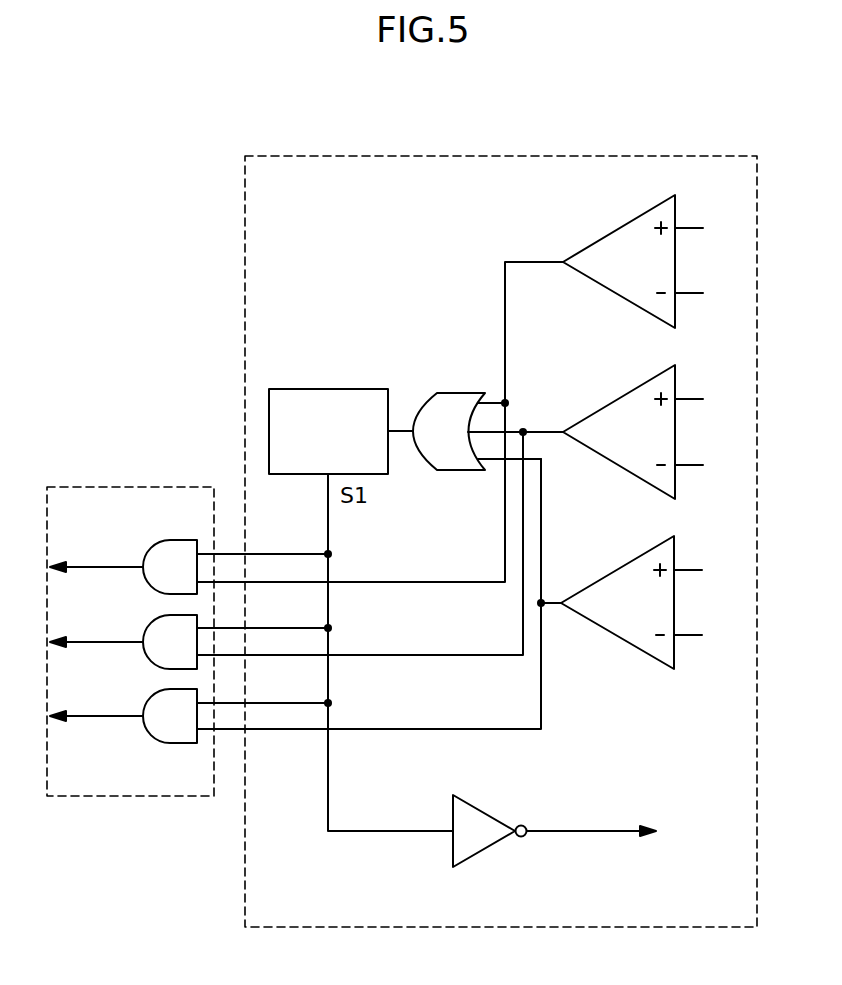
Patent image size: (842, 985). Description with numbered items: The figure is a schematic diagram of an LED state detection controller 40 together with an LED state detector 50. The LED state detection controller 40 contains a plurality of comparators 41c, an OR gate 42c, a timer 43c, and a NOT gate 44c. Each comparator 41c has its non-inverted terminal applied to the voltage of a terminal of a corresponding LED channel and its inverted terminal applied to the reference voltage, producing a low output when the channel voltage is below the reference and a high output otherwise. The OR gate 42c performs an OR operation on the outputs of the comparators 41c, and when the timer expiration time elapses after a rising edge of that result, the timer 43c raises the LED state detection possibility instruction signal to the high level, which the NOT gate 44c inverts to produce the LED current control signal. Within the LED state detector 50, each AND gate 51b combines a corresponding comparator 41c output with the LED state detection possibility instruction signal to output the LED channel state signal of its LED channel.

The LED state detection controller 40 is at (503, 156).
The comparator 41c is at (618, 228).
The OR gate 42c is at (430, 402).
The timer 43c is at (328, 389).
The NOT gate 44c is at (487, 850).
The LED state detector 50 is at (127, 487).
The AND gate 51b is at (162, 540).